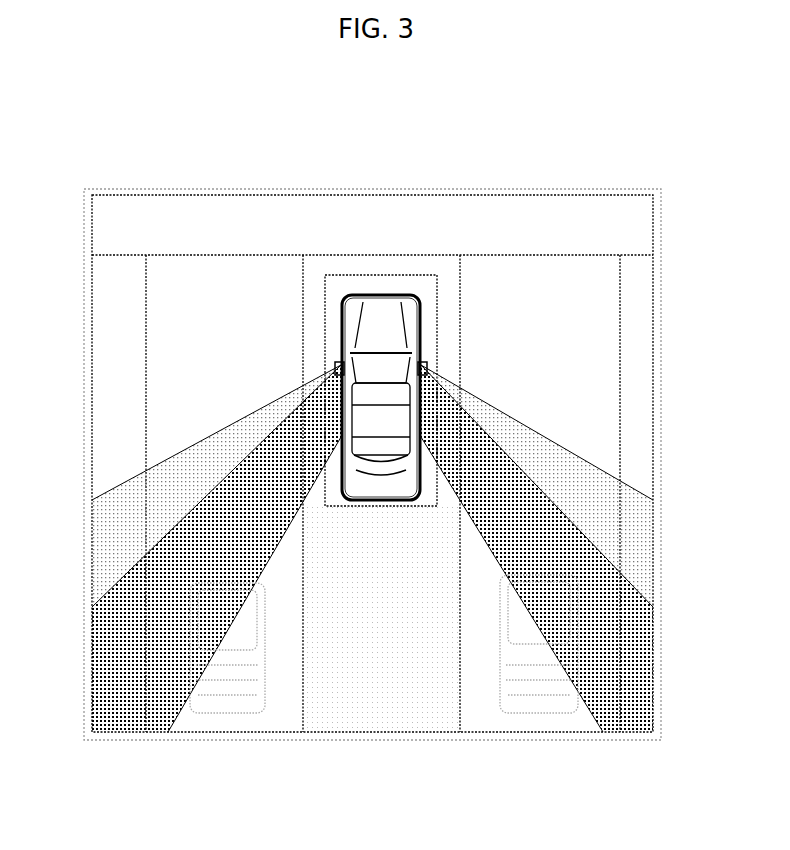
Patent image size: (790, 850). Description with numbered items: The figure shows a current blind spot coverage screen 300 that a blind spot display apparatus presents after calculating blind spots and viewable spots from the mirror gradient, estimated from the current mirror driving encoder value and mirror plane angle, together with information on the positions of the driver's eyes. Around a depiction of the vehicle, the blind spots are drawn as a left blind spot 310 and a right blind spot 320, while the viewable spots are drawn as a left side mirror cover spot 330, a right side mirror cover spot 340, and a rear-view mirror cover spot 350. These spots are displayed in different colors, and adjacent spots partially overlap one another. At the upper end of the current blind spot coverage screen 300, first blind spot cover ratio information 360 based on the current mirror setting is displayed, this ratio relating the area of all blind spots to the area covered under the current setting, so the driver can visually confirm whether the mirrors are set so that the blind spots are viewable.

The current blind spot coverage screen 300 is at (496, 189).
The left blind spot 310 is at (102, 565).
The right blind spot 320 is at (636, 565).
The left side mirror cover spot 330 is at (102, 633).
The right side mirror cover spot 340 is at (636, 633).
The rear-view mirror cover spot 350 is at (379, 718).
The first blind spot cover ratio information 360 is at (410, 210).